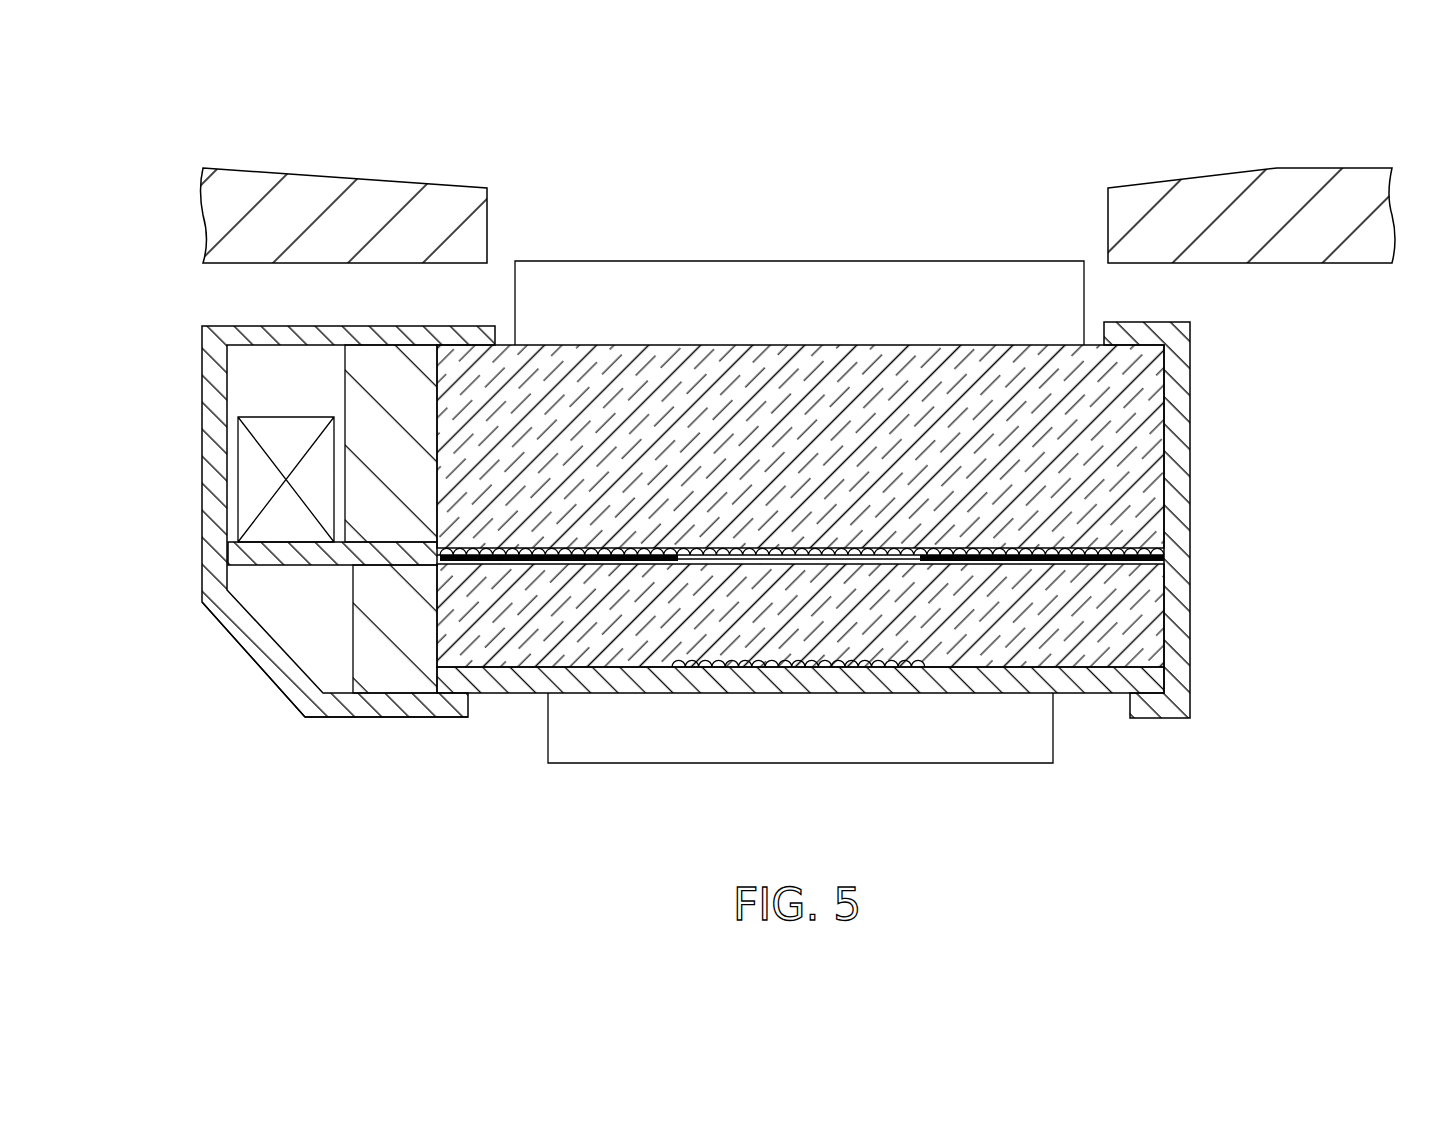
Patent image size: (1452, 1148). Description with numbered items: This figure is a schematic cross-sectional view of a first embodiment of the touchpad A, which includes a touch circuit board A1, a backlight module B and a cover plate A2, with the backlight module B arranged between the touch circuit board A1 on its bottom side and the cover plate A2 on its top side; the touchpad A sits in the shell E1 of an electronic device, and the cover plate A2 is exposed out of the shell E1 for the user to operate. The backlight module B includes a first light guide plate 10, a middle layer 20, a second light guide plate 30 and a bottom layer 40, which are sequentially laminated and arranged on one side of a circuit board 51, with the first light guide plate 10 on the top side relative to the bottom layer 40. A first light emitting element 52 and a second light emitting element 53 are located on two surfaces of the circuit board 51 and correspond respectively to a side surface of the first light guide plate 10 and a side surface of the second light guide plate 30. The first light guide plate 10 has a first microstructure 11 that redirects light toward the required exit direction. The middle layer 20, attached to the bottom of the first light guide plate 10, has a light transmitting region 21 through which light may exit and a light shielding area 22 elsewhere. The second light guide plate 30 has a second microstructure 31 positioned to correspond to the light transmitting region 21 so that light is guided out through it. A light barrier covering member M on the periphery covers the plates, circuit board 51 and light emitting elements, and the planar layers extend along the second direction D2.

The first light guide plate 10 is at (1158, 455).
The first microstructure 11 is at (596, 562).
The middle layer 20 is at (889, 516).
The light transmitting region 21 is at (912, 549).
The light shielding area 22 is at (1158, 546).
The second light guide plate 30 is at (1158, 624).
The second microstructure 31 is at (712, 666).
The bottom layer 40 is at (1100, 683).
The circuit board 51 is at (272, 555).
The first light emitting element 52 is at (388, 428).
The second light emitting element 53 is at (375, 650).
The light barrier covering member M is at (293, 683).
The backlight module B is at (512, 708).
The touchpad A is at (580, 82).
The touch circuit board A1 is at (1033, 766).
The cover plate A2 is at (938, 275).
The shell E1 is at (318, 185).
The second direction D2 is at (1335, 817).